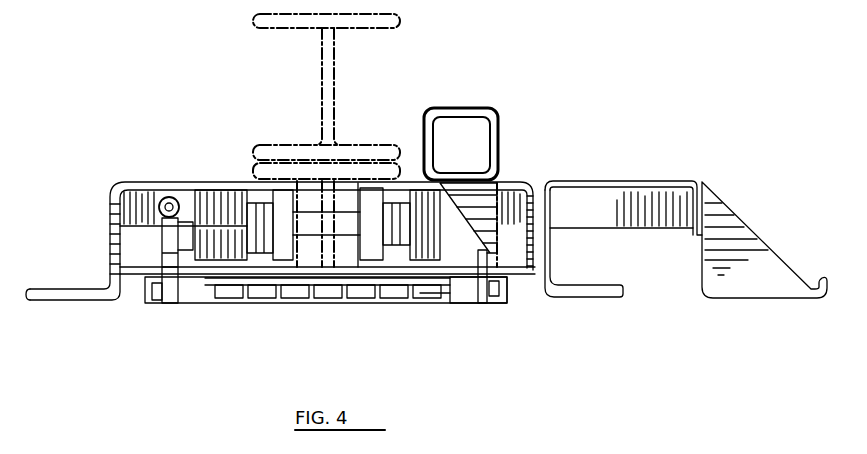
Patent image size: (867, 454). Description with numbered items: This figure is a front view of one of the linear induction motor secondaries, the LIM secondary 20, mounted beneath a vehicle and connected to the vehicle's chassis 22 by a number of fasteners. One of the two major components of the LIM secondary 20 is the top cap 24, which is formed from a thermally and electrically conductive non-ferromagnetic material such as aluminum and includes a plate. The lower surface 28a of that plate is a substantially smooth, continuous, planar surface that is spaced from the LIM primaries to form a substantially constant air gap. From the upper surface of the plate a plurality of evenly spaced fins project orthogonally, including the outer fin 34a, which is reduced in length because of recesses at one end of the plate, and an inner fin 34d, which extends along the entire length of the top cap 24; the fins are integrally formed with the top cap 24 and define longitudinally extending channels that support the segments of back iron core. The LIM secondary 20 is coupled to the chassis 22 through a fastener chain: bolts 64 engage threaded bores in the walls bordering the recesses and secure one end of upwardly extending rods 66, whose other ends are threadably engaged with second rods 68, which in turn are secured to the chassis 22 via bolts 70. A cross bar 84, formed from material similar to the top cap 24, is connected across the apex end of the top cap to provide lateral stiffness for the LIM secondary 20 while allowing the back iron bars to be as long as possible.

The LIM secondary 20 is at (200, 343).
The chassis 22 is at (505, 176).
The top cap 24 is at (489, 309).
The lower surface 28a is at (193, 300).
The fin 34a is at (355, 290).
The fin 34d is at (250, 290).
The bolt 64 is at (501, 290).
The upwardly extending rod 66 is at (500, 268).
The second rod 68 is at (162, 241).
The bolt 70 is at (168, 197).
The cross bar 84 is at (443, 283).